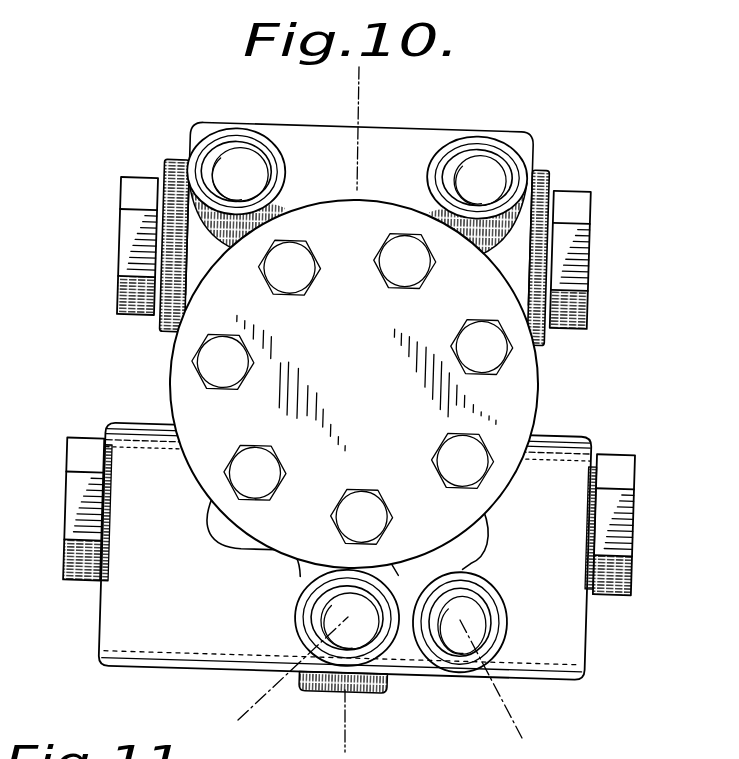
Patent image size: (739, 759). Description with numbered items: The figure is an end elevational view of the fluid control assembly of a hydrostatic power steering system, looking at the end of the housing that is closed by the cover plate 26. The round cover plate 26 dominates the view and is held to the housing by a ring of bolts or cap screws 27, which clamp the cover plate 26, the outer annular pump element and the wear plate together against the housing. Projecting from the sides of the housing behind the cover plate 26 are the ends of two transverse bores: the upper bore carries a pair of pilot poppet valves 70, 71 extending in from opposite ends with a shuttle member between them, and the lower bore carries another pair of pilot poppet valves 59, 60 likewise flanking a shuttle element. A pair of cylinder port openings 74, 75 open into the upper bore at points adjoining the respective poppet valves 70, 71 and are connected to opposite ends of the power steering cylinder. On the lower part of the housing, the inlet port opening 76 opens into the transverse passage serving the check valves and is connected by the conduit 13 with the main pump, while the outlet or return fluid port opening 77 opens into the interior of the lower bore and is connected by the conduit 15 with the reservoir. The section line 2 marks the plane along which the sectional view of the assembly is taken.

The section line 2- 2 is at (342, 80).
The conduit 13 is at (518, 724).
The conduit 15 is at (262, 702).
The cover plate 26 is at (523, 382).
The bolts or cap screws 27 is at (478, 331).
The pilot poppet valve 59 is at (78, 498).
The pilot poppet valve 60 is at (634, 503).
The pilot poppet valve 70 is at (131, 227).
The pilot poppet valve 71 is at (585, 246).
The cylinder port opening 74 is at (228, 160).
The cylinder port opening 75 is at (482, 162).
The inlet port opening 76 is at (451, 640).
The outlet or return fluid port opening 77 is at (360, 627).